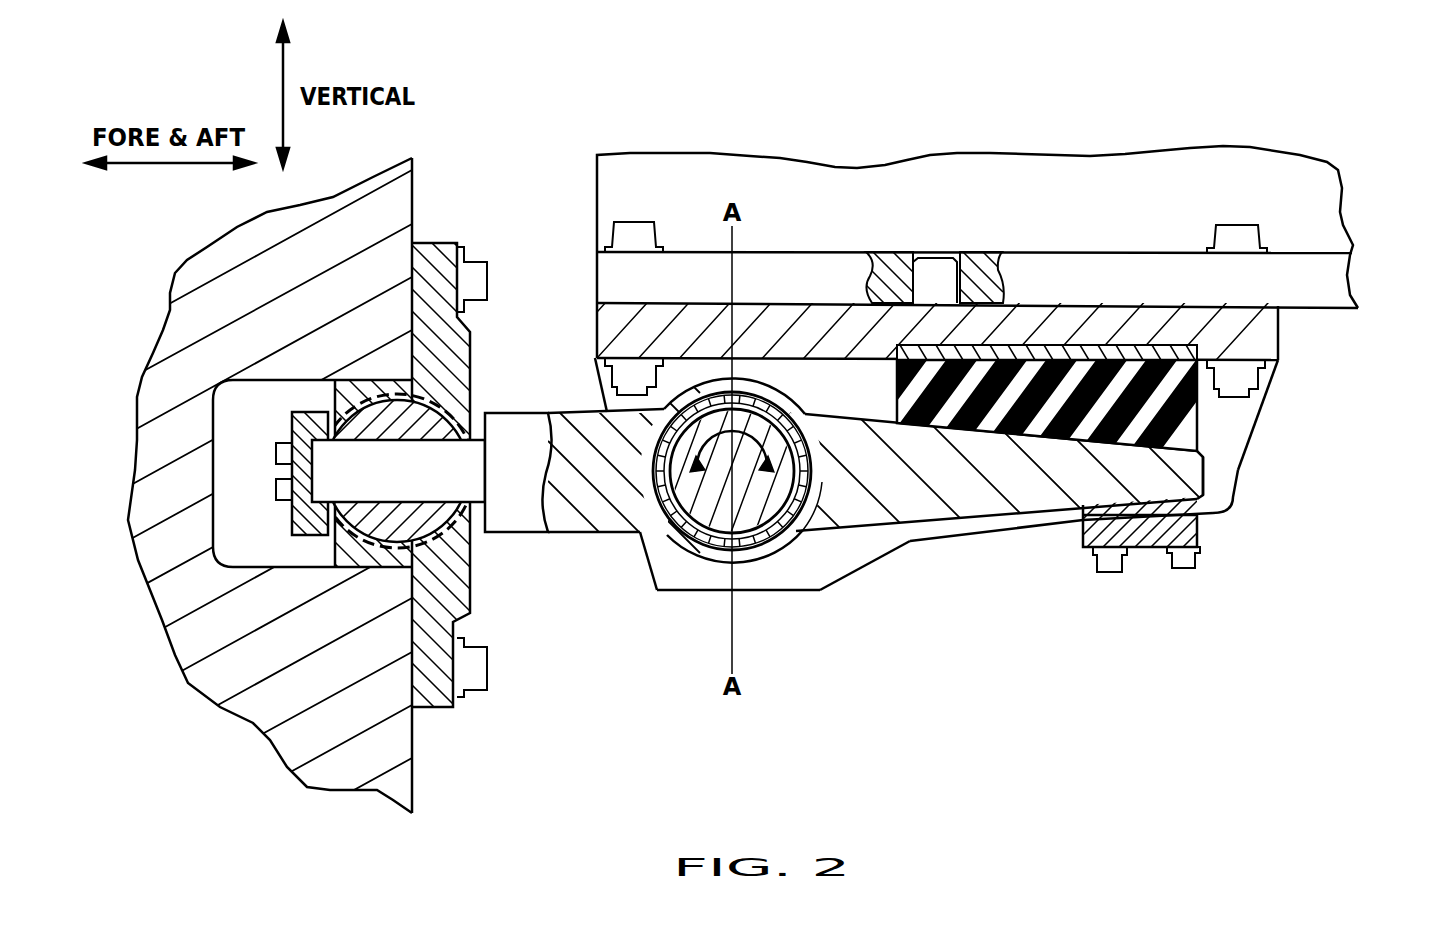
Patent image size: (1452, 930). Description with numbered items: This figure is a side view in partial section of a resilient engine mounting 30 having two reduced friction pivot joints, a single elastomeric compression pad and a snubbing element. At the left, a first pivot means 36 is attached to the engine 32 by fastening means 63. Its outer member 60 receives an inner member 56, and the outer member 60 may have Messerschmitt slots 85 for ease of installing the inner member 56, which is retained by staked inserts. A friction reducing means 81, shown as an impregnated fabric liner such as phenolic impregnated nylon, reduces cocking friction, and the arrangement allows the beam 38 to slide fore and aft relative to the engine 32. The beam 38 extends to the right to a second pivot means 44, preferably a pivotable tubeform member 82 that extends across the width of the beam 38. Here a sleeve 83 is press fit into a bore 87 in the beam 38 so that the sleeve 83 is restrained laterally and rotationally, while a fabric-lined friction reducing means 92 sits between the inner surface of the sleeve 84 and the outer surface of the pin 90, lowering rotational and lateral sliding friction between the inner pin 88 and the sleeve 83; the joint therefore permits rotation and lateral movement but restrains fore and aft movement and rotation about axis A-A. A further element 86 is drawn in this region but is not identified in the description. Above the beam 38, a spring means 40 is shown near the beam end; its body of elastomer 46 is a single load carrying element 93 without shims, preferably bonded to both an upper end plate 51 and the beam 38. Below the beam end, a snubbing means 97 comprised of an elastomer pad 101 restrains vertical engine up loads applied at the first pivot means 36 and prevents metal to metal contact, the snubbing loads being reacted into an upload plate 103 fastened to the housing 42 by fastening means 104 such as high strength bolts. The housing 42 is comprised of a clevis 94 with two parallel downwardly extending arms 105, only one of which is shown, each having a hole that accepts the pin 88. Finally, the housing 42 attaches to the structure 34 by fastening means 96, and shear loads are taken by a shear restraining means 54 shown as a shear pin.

The resilient engine mounting 30 is at (875, 685).
The engine 32 is at (320, 723).
The structure 34 is at (1015, 182).
The first pivot means 36 is at (490, 358).
The beam 38 is at (505, 479).
The spring means 40 is at (1283, 390).
The housing 42 is at (958, 550).
The second pivot means 44 is at (628, 549).
The body of elastomer 46 is at (1213, 440).
The upper end plate 51 is at (1043, 335).
The shear restraining means 54 is at (933, 277).
The inner member 56 is at (390, 567).
The outer member 60 is at (453, 593).
The fastening means 63 is at (490, 290).
The friction reducing means 81 is at (370, 398).
The pivotable tubeform member 82 is at (808, 510).
The sleeve 83 is at (672, 585).
The sleeve 84 is at (723, 565).
The Messerschmitt slots 85 is at (462, 418).
The housing surface 86 is at (780, 565).
The bore 87 is at (657, 447).
The inner pin 88 is at (803, 428).
The pin 90 is at (724, 392).
The friction reducing means 92 is at (763, 394).
The load carrying element 93 is at (1137, 372).
The clevis 94 is at (855, 542).
The fastening means 96 is at (633, 222).
The snubbing means 97 is at (1243, 497).
The elastomer pad 101 is at (1067, 515).
The upload plate 103 is at (1203, 535).
The fastening means 104 is at (1112, 573).
The downwardly extending arms 105 is at (812, 587).